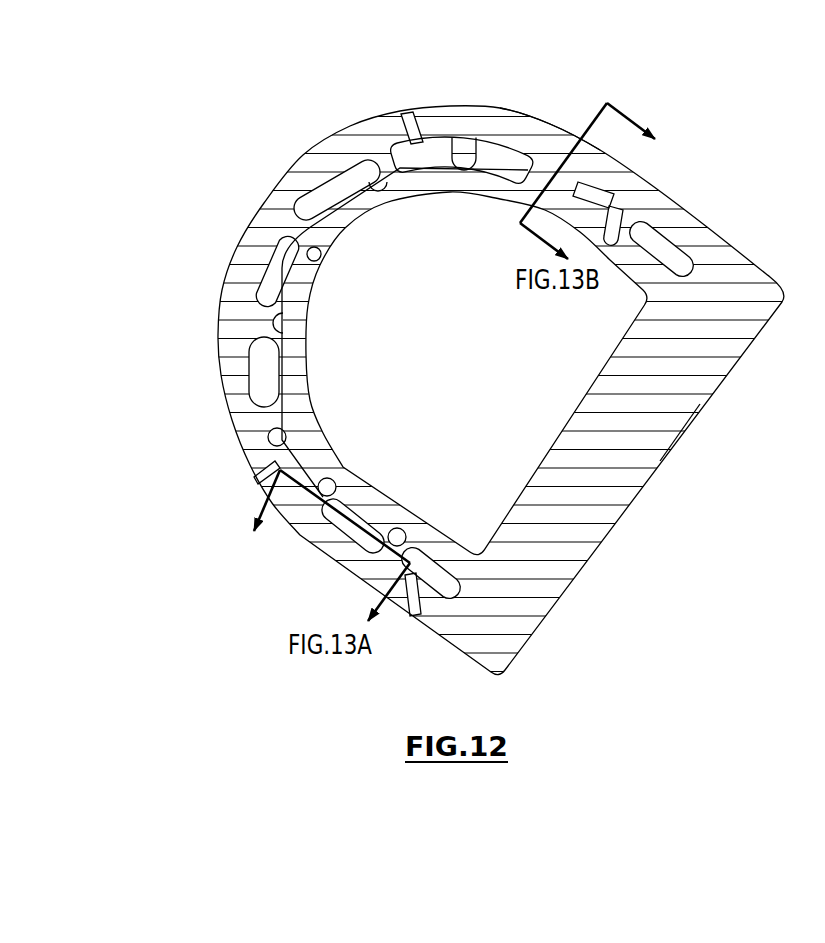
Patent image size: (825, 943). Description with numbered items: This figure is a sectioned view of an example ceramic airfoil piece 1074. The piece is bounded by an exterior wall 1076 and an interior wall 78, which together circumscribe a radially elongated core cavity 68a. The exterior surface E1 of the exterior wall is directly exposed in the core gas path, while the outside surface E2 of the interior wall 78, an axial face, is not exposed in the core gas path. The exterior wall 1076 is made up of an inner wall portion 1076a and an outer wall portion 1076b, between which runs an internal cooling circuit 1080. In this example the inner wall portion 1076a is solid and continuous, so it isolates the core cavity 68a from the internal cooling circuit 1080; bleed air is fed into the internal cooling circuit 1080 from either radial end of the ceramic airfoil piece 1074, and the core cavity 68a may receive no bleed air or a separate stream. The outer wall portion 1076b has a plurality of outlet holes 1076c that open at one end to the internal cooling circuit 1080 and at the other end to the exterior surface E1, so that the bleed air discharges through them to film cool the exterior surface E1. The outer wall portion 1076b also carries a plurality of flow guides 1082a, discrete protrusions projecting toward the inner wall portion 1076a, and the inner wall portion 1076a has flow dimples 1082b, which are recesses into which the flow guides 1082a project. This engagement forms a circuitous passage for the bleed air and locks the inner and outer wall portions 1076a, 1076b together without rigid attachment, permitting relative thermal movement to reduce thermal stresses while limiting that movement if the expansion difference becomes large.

The interior wall 78 is at (641, 489).
The core cavity 68a is at (492, 397).
The exterior wall 1076 is at (364, 136).
The inner wall portion 1076a is at (295, 321).
The outer wall portion 1076b is at (260, 236).
The outlet holes 1076c is at (409, 113).
The internal cooling circuit 1080 is at (253, 366).
The flow guides 1082a is at (482, 150).
The flow dimples 1082b is at (376, 177).
The exterior surface E1 is at (464, 113).
The outside surface E2 is at (700, 404).
The ceramic airfoil piece 1074 is at (267, 594).